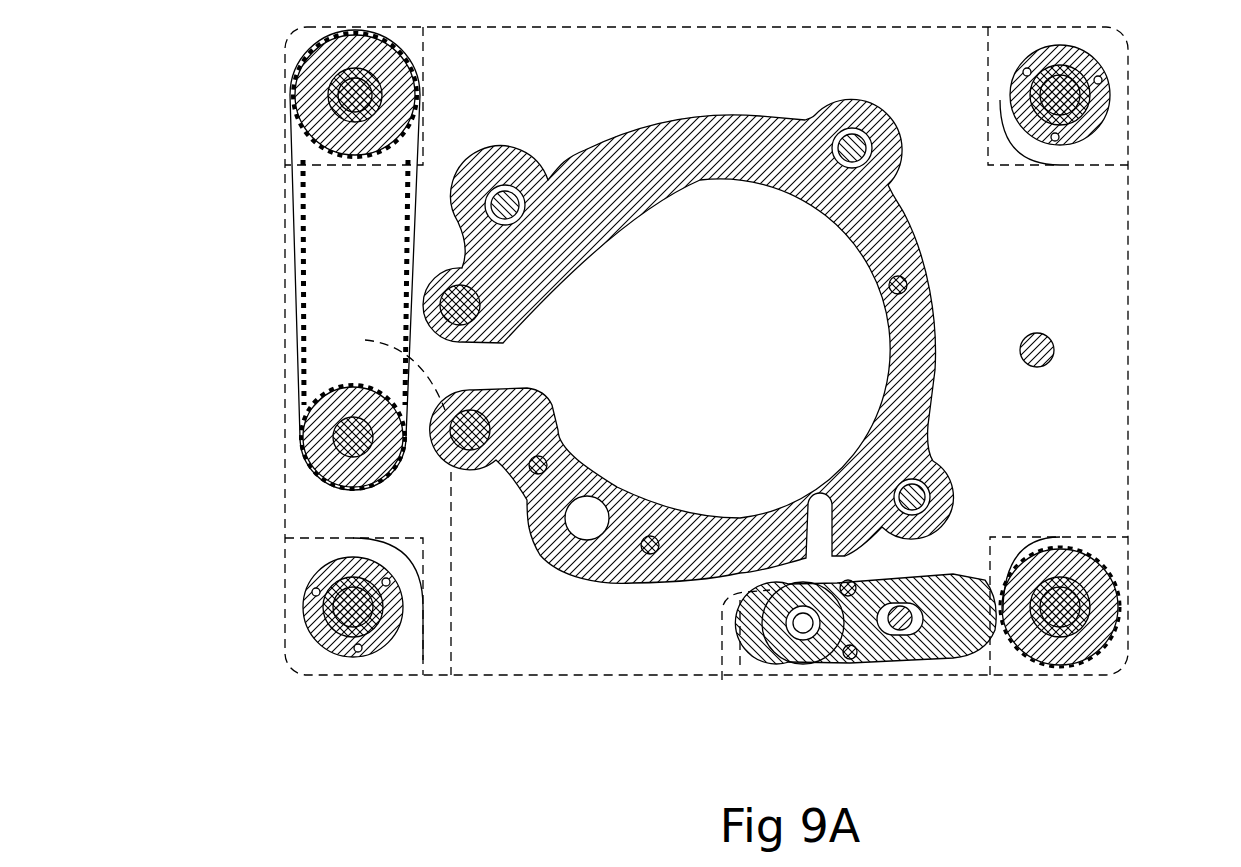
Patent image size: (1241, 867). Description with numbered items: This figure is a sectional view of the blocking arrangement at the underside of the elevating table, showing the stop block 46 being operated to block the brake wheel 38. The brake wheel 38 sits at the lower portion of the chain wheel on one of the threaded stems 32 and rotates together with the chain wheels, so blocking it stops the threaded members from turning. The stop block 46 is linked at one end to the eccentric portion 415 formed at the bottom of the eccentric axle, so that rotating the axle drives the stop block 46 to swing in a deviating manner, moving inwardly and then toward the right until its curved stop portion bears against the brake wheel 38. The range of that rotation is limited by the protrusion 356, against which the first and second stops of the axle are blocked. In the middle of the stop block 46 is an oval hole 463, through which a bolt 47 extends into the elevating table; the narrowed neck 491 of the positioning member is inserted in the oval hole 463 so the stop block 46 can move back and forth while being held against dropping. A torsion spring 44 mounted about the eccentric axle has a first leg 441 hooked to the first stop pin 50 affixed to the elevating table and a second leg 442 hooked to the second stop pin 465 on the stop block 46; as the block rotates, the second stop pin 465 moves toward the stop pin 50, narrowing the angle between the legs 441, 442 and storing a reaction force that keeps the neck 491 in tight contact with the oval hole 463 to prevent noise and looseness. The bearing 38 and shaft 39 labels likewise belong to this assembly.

The threaded stem 32 is at (1065, 600).
The brake wheel 38 is at (1118, 630).
The shaft 39 is at (1090, 625).
The first stop pin 50 is at (925, 565).
The narrowed neck 491 is at (968, 580).
The first leg 441 is at (740, 600).
The protrusion 356 is at (752, 610).
The torsion spring 44 is at (792, 655).
The eccentric portion 415 is at (815, 650).
The second leg 442 is at (824, 660).
The second stop pin 465 is at (849, 660).
The oval hole 463 is at (893, 640).
The bolt 47 is at (905, 648).
The stop block 46 is at (953, 655).